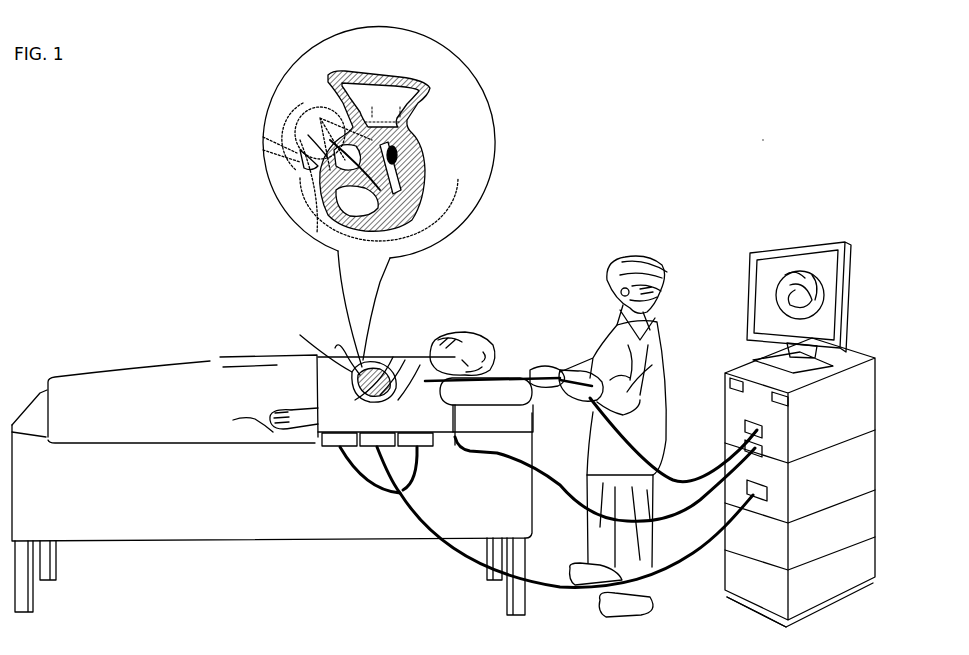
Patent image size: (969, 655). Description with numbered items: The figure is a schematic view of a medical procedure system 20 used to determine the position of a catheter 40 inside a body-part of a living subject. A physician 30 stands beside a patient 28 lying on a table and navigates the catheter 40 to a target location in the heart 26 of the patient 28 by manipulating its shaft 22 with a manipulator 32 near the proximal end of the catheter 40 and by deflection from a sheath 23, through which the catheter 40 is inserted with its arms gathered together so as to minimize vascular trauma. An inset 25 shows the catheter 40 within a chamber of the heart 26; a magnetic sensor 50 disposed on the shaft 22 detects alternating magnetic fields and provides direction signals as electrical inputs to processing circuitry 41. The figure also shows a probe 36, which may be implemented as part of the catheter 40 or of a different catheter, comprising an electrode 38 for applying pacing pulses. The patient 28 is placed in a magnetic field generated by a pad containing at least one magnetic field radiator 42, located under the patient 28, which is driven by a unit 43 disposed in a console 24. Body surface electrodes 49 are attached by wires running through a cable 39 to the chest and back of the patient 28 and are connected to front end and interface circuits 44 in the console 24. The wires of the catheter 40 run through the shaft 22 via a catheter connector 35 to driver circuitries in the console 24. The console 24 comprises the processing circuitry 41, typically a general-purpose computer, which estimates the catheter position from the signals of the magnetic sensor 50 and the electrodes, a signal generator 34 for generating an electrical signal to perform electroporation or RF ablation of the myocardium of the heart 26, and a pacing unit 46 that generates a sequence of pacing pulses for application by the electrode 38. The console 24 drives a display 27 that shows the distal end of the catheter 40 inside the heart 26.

The medical procedure system 20 is at (763, 135).
The shaft 22 is at (300, 143).
The sheath 23 is at (523, 373).
The console 24 is at (898, 244).
The inset 25 is at (297, 133).
The heart 26 is at (426, 163).
The display 27 is at (853, 262).
The patient 28 is at (482, 330).
The physician 30 is at (645, 253).
The manipulator 32 is at (573, 367).
The signal generator 34 is at (878, 385).
The catheter connector 35 is at (745, 428).
The probe 36 is at (312, 167).
The electrode 38 is at (315, 163).
The cable 39 is at (558, 497).
The catheter 40 is at (310, 105).
The processing circuitry 41 is at (877, 507).
The magnetic field radiator 42 is at (334, 455).
The unit 43 is at (877, 452).
The interface circuits 44 is at (717, 388).
The pacing unit 46 is at (877, 557).
The body surface electrodes 49 is at (350, 380).
The magnetic sensor 50 is at (310, 120).